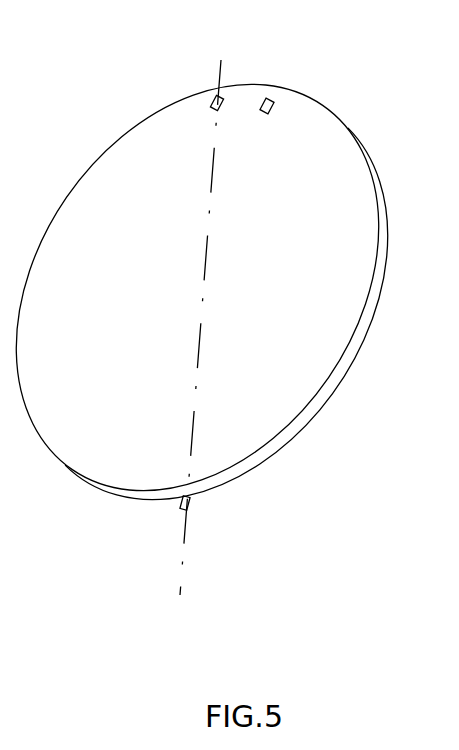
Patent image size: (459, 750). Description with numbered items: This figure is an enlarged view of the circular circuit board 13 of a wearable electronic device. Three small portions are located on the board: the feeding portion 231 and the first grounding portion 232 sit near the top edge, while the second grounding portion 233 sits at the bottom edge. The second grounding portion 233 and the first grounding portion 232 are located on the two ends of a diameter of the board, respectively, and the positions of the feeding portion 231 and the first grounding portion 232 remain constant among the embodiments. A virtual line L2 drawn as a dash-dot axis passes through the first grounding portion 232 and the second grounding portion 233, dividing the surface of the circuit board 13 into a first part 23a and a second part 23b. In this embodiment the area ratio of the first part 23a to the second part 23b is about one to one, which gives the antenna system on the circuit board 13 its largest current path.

The circuit board 13 is at (331, 135).
The line L2 is at (222, 18).
The feeding portion 231 is at (276, 96).
The first grounding portion 232 is at (229, 95).
The second grounding portion 233 is at (195, 501).
The first part 23a is at (310, 272).
The second part 23b is at (135, 327).